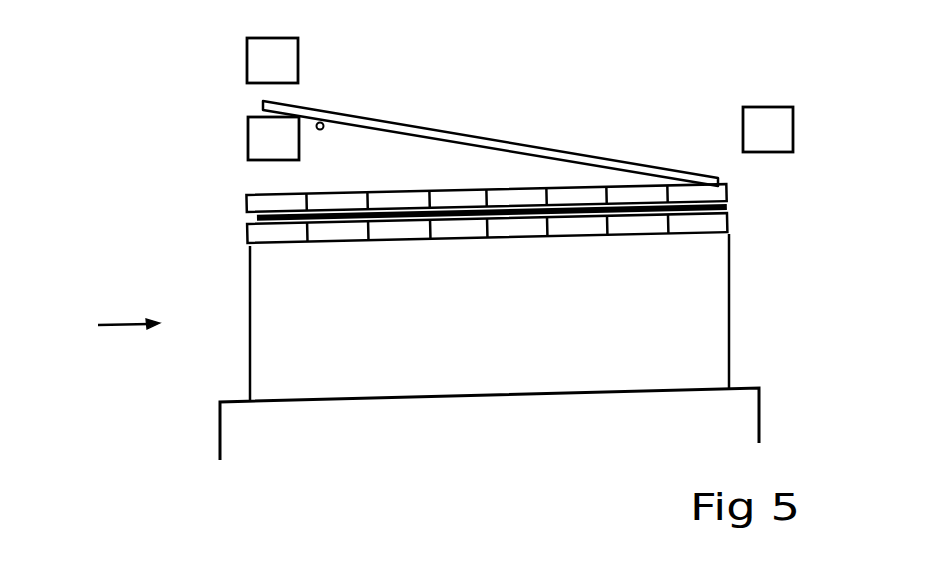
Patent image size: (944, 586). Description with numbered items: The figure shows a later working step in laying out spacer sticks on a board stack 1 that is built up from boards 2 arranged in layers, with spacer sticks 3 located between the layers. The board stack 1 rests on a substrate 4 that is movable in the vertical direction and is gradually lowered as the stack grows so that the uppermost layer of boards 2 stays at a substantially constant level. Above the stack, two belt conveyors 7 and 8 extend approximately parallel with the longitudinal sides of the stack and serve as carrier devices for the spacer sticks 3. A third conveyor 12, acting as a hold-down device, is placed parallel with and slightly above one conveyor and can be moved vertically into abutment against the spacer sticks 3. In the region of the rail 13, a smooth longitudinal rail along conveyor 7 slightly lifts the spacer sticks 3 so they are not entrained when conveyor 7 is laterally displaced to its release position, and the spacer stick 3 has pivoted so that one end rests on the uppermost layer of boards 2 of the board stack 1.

The board stack 1 is at (111, 324).
The boards 2 is at (457, 190).
The spacer sticks 3 is at (498, 142).
The substrate 4 is at (742, 420).
The conveyor 7 is at (262, 135).
The conveyor 8 is at (782, 127).
The third conveyor 12 is at (257, 60).
The longitudinal rail 13 is at (321, 129).